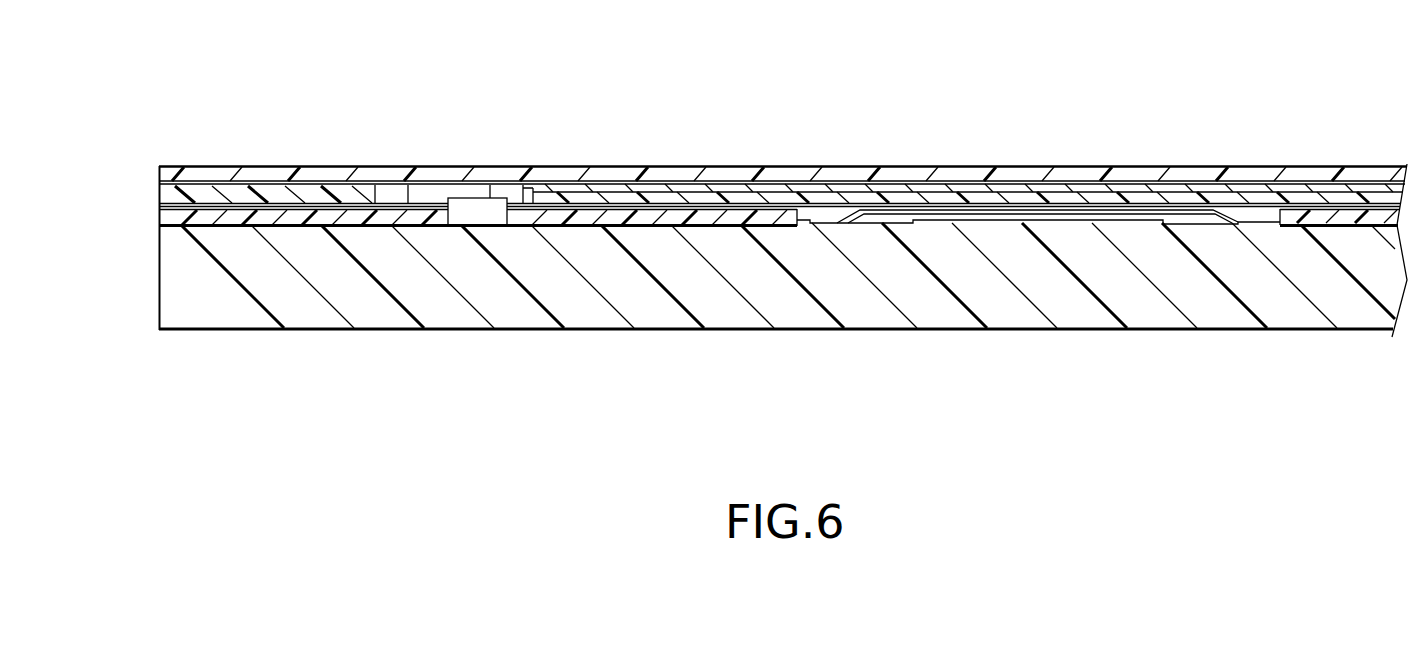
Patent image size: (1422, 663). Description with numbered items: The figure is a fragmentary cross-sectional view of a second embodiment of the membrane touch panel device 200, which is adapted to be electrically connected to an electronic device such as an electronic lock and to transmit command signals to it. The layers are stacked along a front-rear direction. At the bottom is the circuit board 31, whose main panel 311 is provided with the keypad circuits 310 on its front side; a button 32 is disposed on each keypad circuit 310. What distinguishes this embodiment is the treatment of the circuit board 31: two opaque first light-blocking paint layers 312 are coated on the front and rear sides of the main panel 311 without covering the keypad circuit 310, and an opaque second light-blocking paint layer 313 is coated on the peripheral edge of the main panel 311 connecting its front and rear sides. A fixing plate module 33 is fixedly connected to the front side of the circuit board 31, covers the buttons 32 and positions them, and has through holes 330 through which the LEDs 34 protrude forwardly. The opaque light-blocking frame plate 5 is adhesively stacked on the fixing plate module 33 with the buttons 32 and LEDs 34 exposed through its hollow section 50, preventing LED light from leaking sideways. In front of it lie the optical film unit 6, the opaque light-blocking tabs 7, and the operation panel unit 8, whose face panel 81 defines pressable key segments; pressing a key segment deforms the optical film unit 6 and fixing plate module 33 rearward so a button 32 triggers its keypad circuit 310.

The membrane touch panel device 200 is at (184, 153).
The operation panel unit 8 is at (247, 166).
The face panel 81 is at (287, 178).
The light-blocking frame plate 5 is at (363, 197).
The hollow section 50 is at (393, 195).
The opaque light-blocking tab 7 is at (447, 185).
The optical film unit 6 is at (578, 190).
The button 32 is at (981, 215).
The second light-blocking paint layer 313 is at (157, 273).
The fixing plate module 33 is at (258, 218).
The through hole 330 is at (393, 217).
The LED 34 is at (484, 213).
The first light-blocking paint layer 312 is at (657, 226).
The keypad circuit 310 is at (980, 225).
The circuit board 31 is at (1077, 330).
The main panel 311 is at (1198, 310).